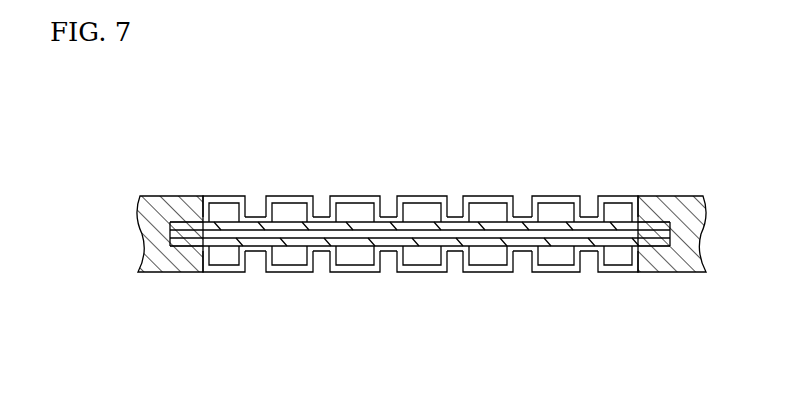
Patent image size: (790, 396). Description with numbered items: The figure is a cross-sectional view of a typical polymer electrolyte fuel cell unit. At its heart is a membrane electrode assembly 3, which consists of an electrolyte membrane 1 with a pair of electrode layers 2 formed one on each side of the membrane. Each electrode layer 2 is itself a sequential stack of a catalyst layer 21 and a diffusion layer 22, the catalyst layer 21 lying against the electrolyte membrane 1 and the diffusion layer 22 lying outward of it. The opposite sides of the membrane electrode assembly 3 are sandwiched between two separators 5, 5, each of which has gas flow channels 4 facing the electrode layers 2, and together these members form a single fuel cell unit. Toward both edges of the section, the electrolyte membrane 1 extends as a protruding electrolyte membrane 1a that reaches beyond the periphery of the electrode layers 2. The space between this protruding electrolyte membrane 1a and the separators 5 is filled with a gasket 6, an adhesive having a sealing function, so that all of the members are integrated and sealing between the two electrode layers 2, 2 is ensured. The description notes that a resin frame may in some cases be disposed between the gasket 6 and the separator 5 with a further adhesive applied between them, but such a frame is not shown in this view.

The electrolyte membrane 1 is at (387, 272).
The protruding electrolyte membrane 1a is at (176, 272).
The electrode layer 2 is at (420, 239).
The catalyst layer 21 is at (322, 217).
The diffusion layer 22 is at (361, 217).
The membrane electrode assembly 3 is at (420, 240).
The gas flow channel 4 is at (518, 198).
The separator 5 is at (284, 196).
The gasket 6 is at (158, 196).